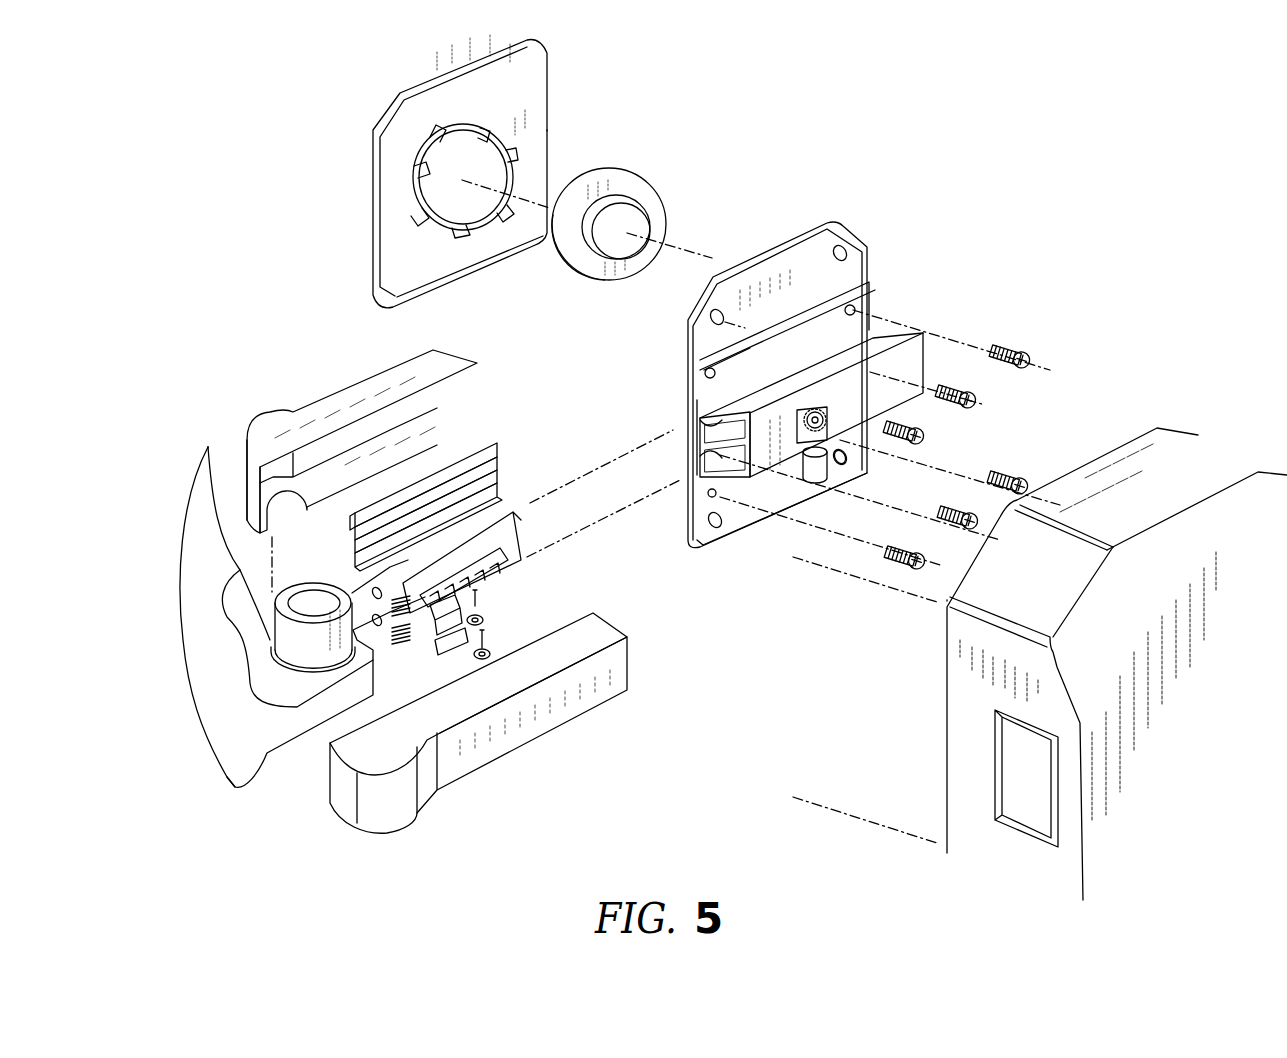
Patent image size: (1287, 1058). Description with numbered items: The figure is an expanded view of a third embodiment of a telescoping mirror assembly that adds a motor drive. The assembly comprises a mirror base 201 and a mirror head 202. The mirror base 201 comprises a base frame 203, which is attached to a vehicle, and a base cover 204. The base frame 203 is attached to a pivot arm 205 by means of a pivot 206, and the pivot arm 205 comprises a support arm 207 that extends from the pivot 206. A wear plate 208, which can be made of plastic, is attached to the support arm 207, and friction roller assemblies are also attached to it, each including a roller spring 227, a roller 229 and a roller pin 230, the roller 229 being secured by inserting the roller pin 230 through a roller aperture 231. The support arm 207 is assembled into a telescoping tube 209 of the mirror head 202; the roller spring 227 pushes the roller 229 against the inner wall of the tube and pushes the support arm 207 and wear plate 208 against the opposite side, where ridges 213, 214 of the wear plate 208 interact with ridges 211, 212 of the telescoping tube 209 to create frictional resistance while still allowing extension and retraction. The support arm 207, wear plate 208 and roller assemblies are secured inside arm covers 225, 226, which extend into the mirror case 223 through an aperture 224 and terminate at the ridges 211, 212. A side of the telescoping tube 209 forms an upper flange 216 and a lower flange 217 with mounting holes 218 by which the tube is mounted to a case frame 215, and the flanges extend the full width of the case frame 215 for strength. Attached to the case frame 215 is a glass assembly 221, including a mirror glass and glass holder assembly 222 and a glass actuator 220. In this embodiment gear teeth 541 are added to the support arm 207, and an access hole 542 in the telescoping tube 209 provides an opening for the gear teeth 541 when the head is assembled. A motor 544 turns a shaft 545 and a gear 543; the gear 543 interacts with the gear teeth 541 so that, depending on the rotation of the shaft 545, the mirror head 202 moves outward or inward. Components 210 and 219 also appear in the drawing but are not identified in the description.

The mirror base 201 is at (218, 327).
The mirror head 202 is at (935, 120).
The base frame 203 is at (193, 717).
The base cover 204 is at (233, 740).
The pivot arm 205 is at (300, 640).
The pivot 206 is at (320, 603).
The support arm 207 is at (507, 510).
The wear plate 208 is at (473, 450).
The telescoping tube 209 is at (850, 404).
The clip 210 is at (700, 460).
The ridge 211 is at (690, 408).
The ridge 212 is at (700, 457).
The ridge 213 is at (487, 470).
The ridge 214 is at (497, 490).
The case frame 215 is at (847, 238).
The upper flange 216 is at (840, 293).
The lower flange 217 is at (833, 487).
The mounting holes 218 is at (870, 303).
The screw 219 is at (1030, 348).
The glass actuator 220 is at (642, 210).
The glass assembly 221 is at (542, 20).
The mirror glass and glass holder assembly 222 is at (380, 122).
The mirror case 223 is at (1080, 475).
The aperture 224 is at (1002, 757).
The arm cover 225 is at (330, 412).
The arm cover 226 is at (570, 710).
The roller spring 227 is at (527, 547).
The roller 229 is at (494, 624).
The roller pin 230 is at (480, 598).
The roller aperture 231 is at (430, 645).
The gear teeth 541 is at (467, 567).
The access hole 542 is at (823, 420).
The gear 543 is at (833, 423).
The motor 544 is at (810, 480).
The shaft 545 is at (817, 407).